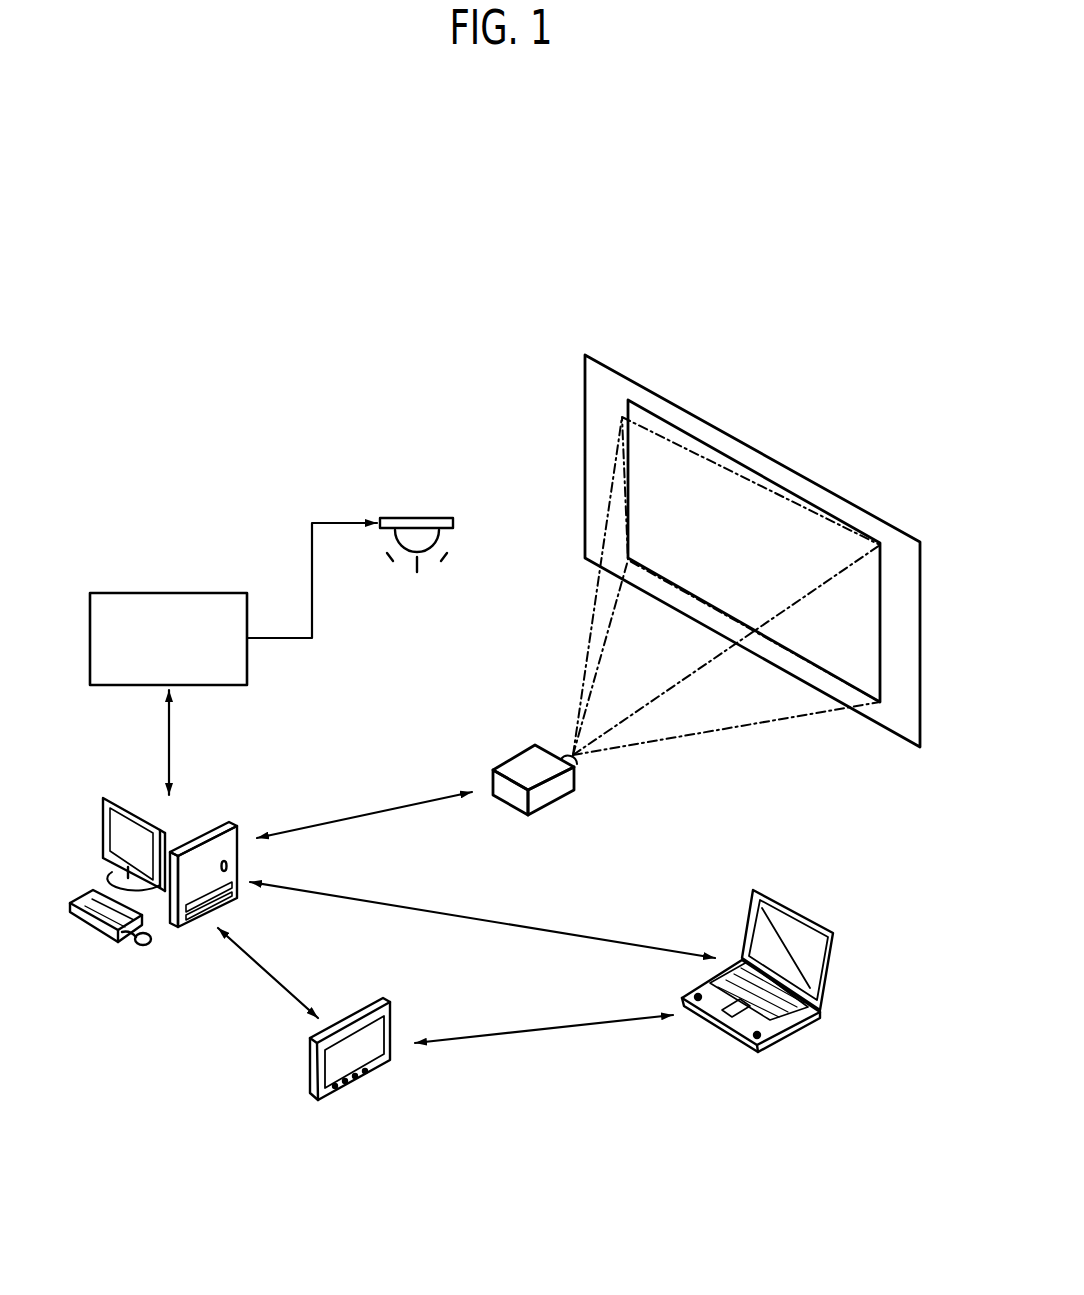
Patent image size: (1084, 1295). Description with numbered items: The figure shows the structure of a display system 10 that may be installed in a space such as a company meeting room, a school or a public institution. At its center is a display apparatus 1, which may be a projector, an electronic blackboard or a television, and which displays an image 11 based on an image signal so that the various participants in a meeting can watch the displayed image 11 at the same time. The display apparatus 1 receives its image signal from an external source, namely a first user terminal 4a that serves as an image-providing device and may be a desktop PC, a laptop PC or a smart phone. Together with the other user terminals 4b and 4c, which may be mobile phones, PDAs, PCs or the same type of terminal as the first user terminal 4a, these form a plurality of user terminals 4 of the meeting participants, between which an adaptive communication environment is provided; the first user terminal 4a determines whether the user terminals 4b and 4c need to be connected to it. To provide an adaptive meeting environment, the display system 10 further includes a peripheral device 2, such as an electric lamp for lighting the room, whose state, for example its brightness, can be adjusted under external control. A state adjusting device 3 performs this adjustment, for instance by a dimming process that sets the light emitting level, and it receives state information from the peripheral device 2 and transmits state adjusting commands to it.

The display system 10 is at (594, 292).
The image 11 is at (768, 455).
The display apparatus 1 is at (503, 765).
The peripheral device 2 is at (416, 517).
The state adjusting device 3 is at (166, 592).
The user terminals 4 is at (232, 1148).
The first user terminal 4a is at (168, 927).
The user terminal 4b is at (357, 1078).
The user terminal 4c is at (752, 1038).